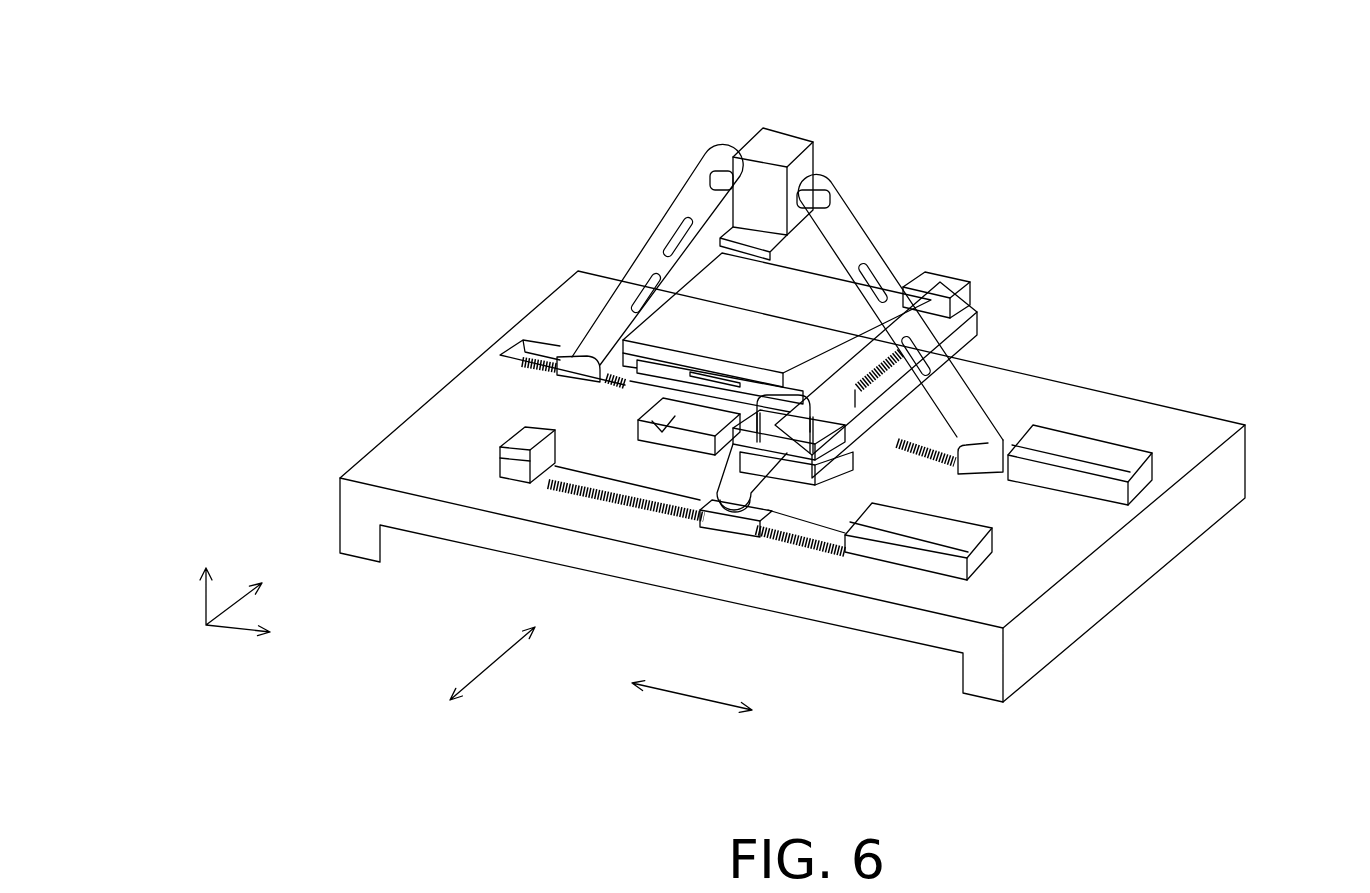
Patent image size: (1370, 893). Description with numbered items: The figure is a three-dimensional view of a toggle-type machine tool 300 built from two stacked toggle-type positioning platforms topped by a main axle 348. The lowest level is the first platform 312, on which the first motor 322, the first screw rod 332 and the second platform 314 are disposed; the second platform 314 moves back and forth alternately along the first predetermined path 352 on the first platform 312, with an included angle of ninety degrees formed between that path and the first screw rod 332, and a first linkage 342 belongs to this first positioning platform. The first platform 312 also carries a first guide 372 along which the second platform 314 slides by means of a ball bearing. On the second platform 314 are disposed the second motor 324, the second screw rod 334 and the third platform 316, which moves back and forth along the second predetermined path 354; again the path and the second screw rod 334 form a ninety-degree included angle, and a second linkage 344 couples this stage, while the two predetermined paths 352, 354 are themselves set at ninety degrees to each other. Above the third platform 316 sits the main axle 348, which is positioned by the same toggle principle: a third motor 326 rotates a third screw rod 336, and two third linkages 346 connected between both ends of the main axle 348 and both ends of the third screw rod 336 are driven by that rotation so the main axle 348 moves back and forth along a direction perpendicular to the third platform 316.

The toggle-type machine tool 300 is at (1318, 758).
The first platform 312 is at (1217, 490).
The second platform 314 is at (640, 382).
The third platform 316 is at (820, 288).
The first motor 322 is at (943, 540).
The second motor 324 is at (940, 282).
The third motor 326 is at (1113, 452).
The first screw rod 332 is at (547, 490).
The second screw rod 334 is at (912, 352).
The third screw rod 336 is at (953, 458).
The first linkage 342 is at (722, 492).
The second linkage 344 is at (828, 388).
The third linkages 346 is at (698, 182).
The main axle 348 is at (778, 150).
The first predetermined path 352 is at (490, 662).
The second predetermined path 354 is at (692, 713).
The first guide 372 is at (838, 473).